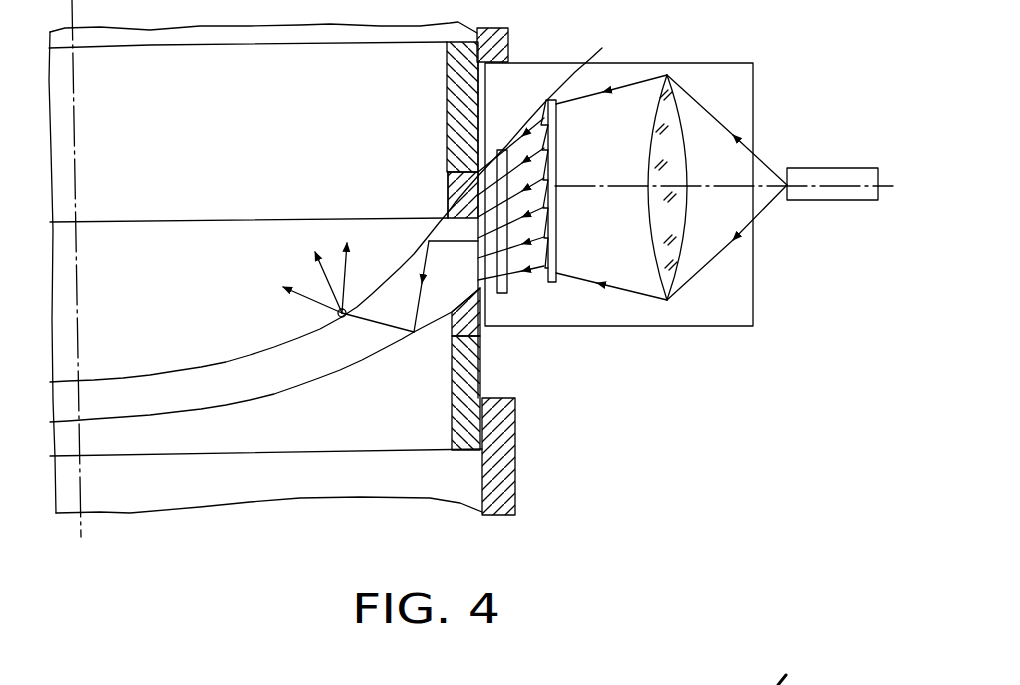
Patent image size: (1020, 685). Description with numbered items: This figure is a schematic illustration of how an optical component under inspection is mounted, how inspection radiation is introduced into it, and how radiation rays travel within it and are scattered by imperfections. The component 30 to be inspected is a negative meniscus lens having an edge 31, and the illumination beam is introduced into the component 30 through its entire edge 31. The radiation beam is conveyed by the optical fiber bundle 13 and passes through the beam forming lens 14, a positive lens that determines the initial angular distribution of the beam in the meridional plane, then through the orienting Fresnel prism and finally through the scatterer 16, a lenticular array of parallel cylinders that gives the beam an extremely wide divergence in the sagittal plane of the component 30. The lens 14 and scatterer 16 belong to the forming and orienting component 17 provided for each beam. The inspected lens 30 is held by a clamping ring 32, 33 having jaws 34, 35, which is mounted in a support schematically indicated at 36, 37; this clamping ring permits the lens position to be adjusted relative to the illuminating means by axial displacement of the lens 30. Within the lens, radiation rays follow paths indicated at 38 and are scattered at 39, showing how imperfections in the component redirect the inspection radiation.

The optical fiber bundle 13 is at (810, 172).
The beam forming lens 14 is at (667, 137).
The scatterer 16 is at (606, 46).
The forming and orienting component 17 is at (697, 327).
The component to be inspected 30 is at (228, 375).
The edge 31 is at (508, 292).
The clamping ring 32 is at (460, 412).
The clamping ring 33 is at (447, 98).
The jaw 34 is at (478, 327).
The jaw 35 is at (450, 185).
The support 36 is at (508, 42).
The support 37 is at (515, 492).
The reflected beam 38 is at (342, 317).
The scattered light 39 is at (325, 270).